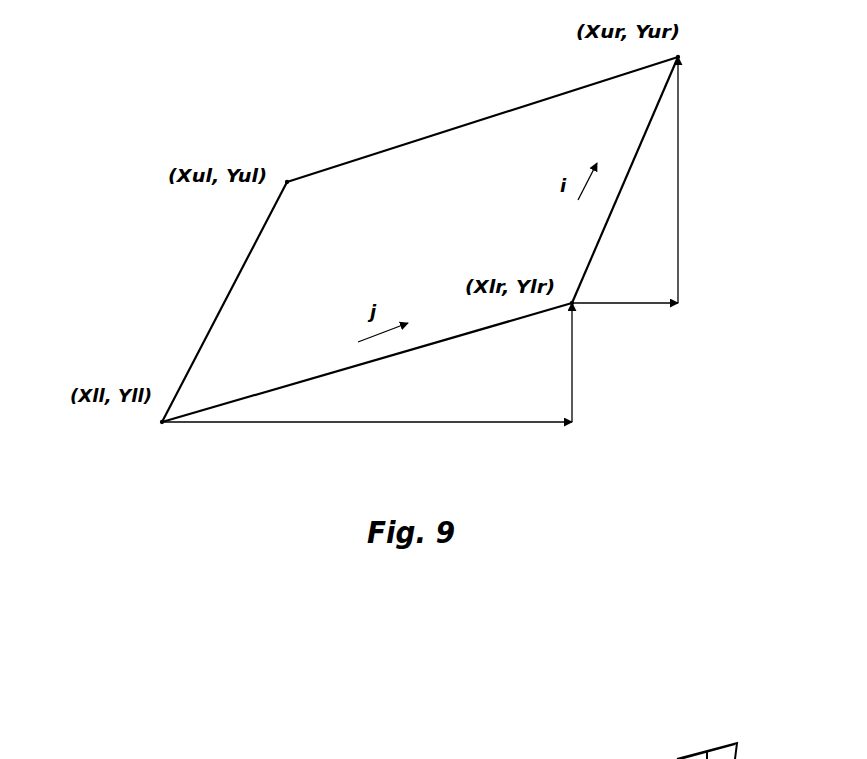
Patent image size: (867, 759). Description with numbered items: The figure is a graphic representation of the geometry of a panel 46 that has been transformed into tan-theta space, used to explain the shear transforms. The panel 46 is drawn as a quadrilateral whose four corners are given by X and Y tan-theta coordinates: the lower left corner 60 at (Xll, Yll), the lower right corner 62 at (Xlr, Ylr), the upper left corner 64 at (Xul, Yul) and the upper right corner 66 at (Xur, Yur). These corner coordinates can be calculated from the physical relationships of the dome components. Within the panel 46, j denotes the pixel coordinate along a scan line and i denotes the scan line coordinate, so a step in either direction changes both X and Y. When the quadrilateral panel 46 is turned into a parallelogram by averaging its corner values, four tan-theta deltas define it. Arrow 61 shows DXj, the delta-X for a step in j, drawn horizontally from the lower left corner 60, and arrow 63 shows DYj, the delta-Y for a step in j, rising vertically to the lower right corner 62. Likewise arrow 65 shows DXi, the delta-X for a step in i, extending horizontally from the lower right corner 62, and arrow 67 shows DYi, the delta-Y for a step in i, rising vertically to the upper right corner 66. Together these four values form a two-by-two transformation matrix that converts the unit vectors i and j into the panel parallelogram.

The panel 46 is at (472, 122).
The lower left corner 60 is at (162, 424).
The delta-X for a step in j arrow 61 is at (412, 423).
The lower right corner 62 is at (575, 305).
The delta-Y for a step in j arrow 63 is at (572, 385).
The upper left corner 64 is at (287, 180).
The delta-X for a step in i arrow 65 is at (654, 305).
The upper right corner 66 is at (680, 56).
The delta-Y for a step in i arrow 67 is at (679, 175).